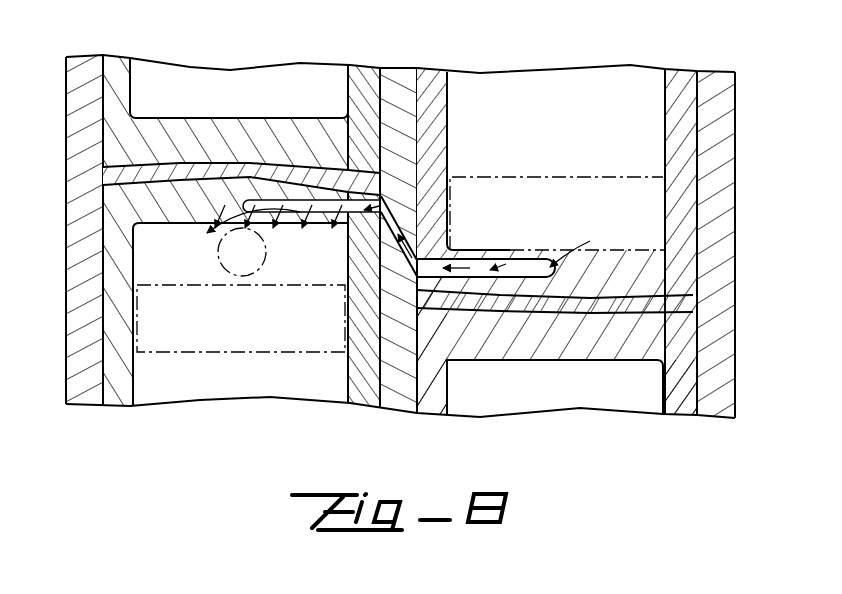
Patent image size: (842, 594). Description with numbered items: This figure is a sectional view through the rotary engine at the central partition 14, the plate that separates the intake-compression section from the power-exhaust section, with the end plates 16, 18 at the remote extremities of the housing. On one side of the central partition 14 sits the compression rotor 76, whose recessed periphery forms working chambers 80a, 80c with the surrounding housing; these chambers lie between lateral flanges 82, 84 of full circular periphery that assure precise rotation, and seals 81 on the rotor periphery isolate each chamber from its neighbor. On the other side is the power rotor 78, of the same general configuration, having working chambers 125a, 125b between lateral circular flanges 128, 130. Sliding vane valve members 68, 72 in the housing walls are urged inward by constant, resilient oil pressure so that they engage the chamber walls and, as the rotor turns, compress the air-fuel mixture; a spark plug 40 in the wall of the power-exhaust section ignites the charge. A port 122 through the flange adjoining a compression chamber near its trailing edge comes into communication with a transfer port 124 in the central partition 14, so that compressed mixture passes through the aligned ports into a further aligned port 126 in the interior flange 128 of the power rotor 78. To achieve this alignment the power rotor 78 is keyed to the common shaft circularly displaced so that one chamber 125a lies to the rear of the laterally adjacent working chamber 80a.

The central partition 14 is at (396, 68).
The end plate 16 is at (720, 80).
The end plate 18 is at (72, 150).
The spark plug 40 is at (217, 250).
The sliding vane valve member 68 is at (546, 176).
The sliding vane valve member 72 is at (215, 352).
The compression rotor 76 is at (692, 186).
The power rotor 78 is at (103, 233).
The working chamber 80a is at (555, 94).
The working chamber 80c is at (580, 400).
The seal 81 is at (103, 185).
The lateral flange 82 is at (676, 412).
The lateral flange 84 is at (430, 408).
The port 122 is at (481, 273).
The transfer port 124 is at (393, 233).
The working chamber 125a is at (265, 385).
The working chamber 125b is at (237, 84).
The port 126 is at (295, 230).
The interior flange 128 is at (366, 72).
The lateral flange 130 is at (110, 60).